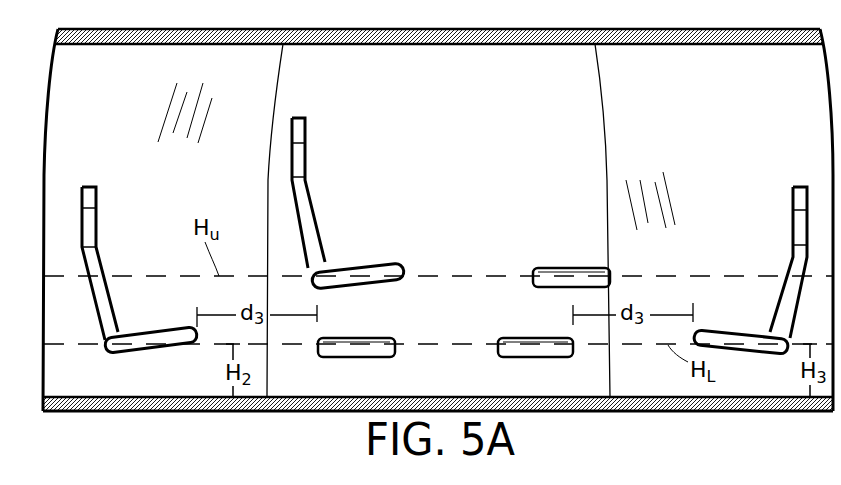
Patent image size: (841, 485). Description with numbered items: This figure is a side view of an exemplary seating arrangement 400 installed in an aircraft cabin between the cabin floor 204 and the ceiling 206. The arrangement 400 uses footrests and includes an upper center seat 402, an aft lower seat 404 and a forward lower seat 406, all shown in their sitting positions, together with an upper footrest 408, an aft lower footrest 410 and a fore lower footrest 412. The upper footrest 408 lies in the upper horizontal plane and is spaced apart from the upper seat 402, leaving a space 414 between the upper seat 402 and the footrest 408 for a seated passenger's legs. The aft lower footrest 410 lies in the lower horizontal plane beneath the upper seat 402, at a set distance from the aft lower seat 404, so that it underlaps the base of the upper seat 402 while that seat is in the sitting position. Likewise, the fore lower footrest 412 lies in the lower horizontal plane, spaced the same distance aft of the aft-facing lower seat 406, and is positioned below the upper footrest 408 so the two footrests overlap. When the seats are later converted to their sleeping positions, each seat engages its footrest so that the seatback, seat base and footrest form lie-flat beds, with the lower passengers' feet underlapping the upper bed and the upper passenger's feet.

The aircraft cabin floor 204 is at (700, 397).
The ceiling 206 is at (158, 44).
The seating arrangement 400 is at (405, 186).
The upper center seat 402 is at (330, 203).
The aft lower seat 404 is at (140, 269).
The forward lower seat 406 is at (750, 256).
The upper footrest 408 is at (553, 276).
The aft lower footrest 410 is at (337, 350).
The fore lower footrest 412 is at (513, 350).
The space 414 is at (468, 262).